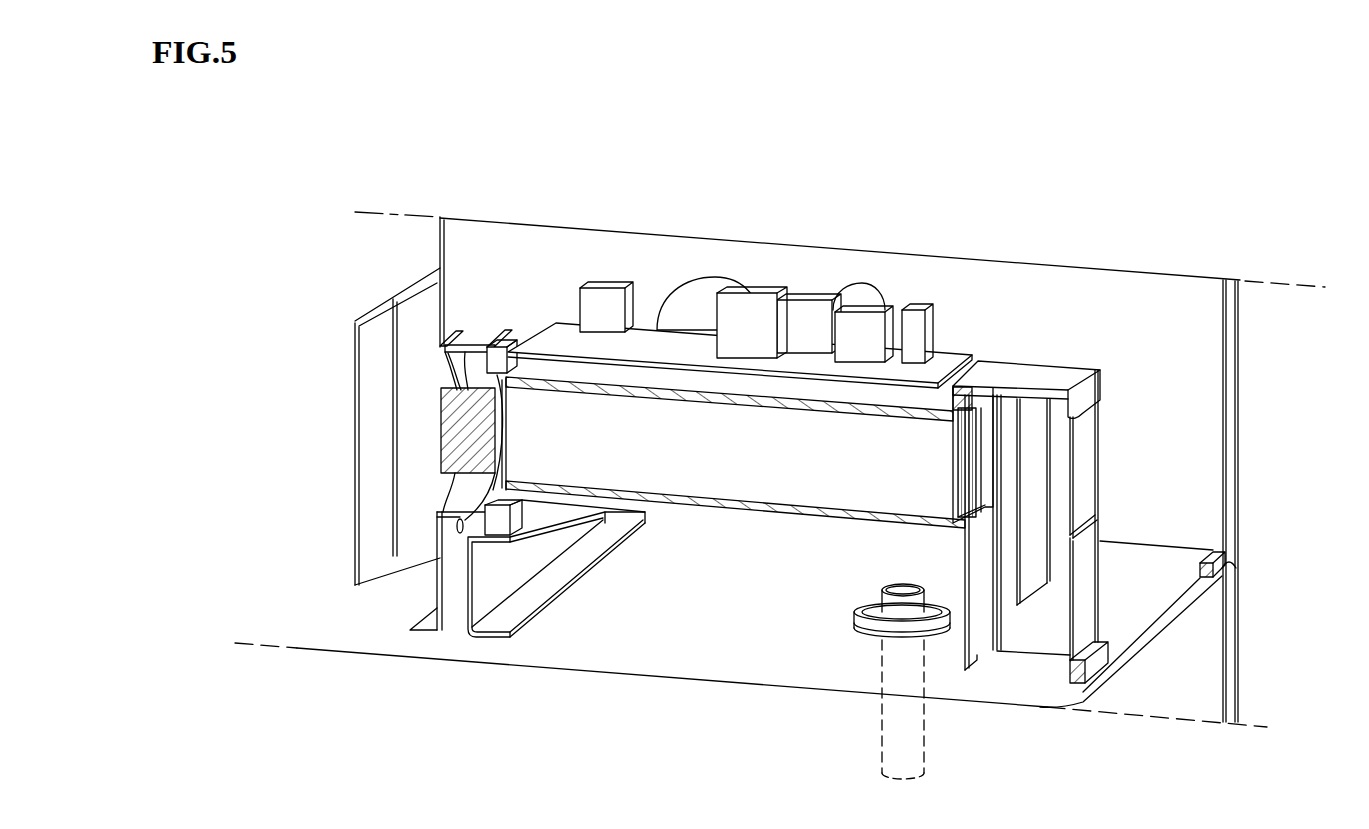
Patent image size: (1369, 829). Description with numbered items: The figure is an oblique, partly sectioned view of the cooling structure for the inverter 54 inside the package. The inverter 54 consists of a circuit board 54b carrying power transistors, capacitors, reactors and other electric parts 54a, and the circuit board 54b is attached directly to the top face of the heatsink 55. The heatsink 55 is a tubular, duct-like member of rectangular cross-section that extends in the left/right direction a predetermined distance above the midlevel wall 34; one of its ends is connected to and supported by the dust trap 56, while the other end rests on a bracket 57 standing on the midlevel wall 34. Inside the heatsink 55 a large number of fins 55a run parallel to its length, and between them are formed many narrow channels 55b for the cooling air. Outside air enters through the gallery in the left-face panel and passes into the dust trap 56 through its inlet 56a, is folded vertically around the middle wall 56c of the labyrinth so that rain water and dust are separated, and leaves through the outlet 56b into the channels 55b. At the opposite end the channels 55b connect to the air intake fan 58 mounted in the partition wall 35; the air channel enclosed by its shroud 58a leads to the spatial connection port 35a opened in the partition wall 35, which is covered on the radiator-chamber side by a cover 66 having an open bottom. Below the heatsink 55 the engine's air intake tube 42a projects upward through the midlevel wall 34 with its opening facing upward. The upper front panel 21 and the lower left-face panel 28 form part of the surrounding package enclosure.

The panel 21 is at (1185, 335).
The panel 28 is at (1210, 655).
The midlevel wall 34 is at (697, 650).
The partition wall 35 is at (440, 242).
The spatial connection port 35a is at (437, 382).
The air intake tube 42a is at (853, 617).
The inverter 54 is at (888, 308).
The electric parts 54a is at (607, 297).
The circuit board 54b is at (942, 360).
The heatsink 55 is at (695, 463).
The fins 55a is at (985, 462).
The channels 55b is at (780, 468).
The dust trap 56 is at (962, 650).
The inlet 56a is at (1100, 413).
The outlet 56b is at (993, 388).
The middle wall 56c is at (1033, 475).
The bracket 57 is at (492, 580).
The air intake fan 58 is at (437, 473).
The shroud 58a is at (463, 530).
The cover 66 is at (353, 420).